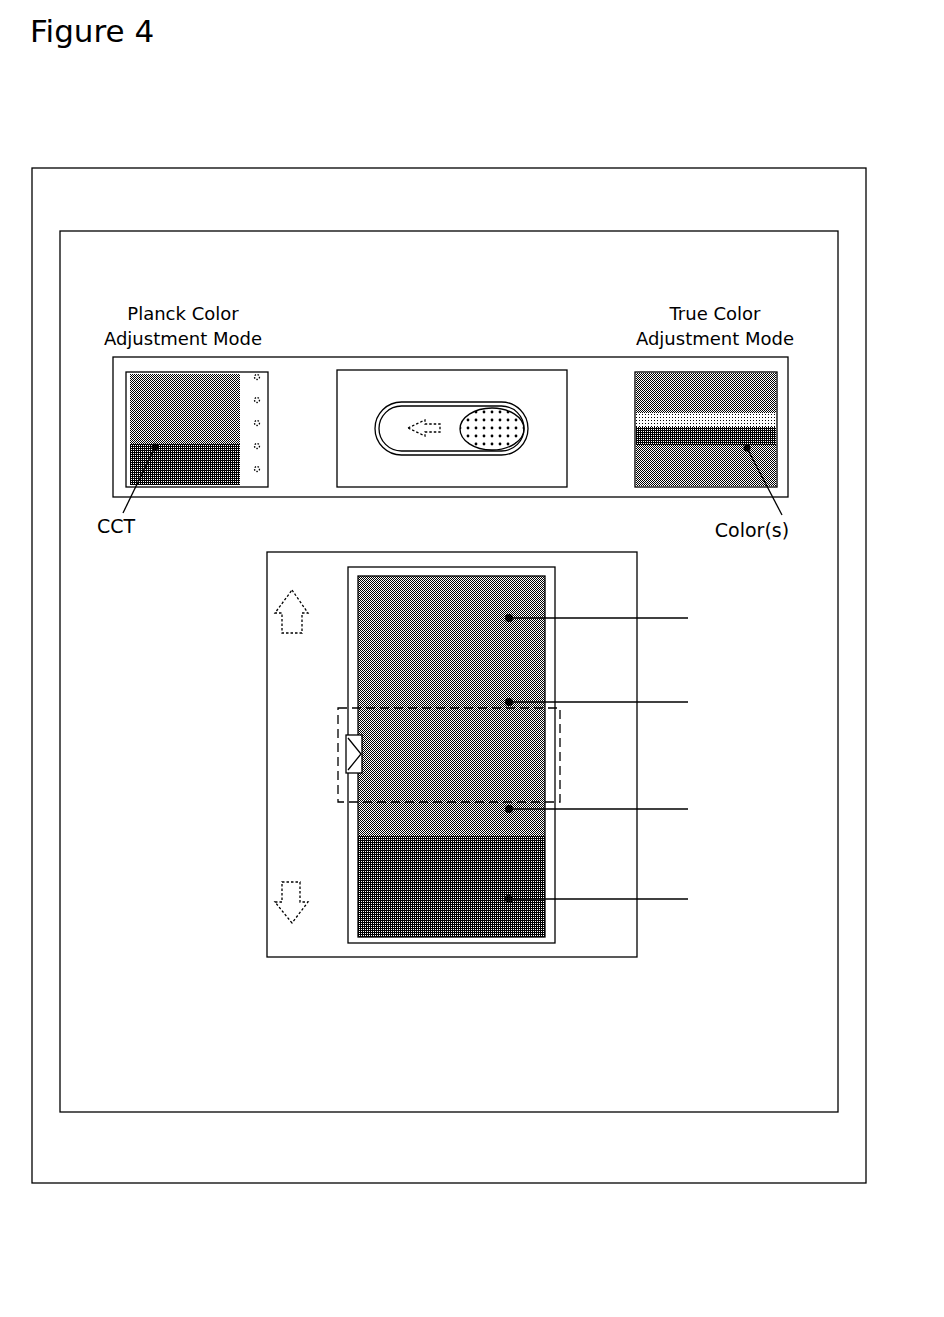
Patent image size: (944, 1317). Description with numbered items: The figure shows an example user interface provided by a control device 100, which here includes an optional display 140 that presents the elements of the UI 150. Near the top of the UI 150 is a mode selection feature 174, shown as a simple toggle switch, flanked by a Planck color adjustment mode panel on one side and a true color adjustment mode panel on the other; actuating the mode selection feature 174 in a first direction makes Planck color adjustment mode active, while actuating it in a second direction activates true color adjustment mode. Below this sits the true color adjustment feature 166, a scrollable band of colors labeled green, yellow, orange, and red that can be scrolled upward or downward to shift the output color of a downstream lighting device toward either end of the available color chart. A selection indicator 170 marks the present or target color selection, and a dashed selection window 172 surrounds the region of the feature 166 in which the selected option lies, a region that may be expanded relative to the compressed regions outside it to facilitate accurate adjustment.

The control device 100 is at (449, 675).
The display 140 is at (449, 671).
The UI 150 is at (735, 1000).
The true color adjustment feature 166 is at (485, 935).
The selection indicator 170 is at (346, 760).
The selection window 172 is at (560, 753).
The mode selection feature 174 is at (490, 427).